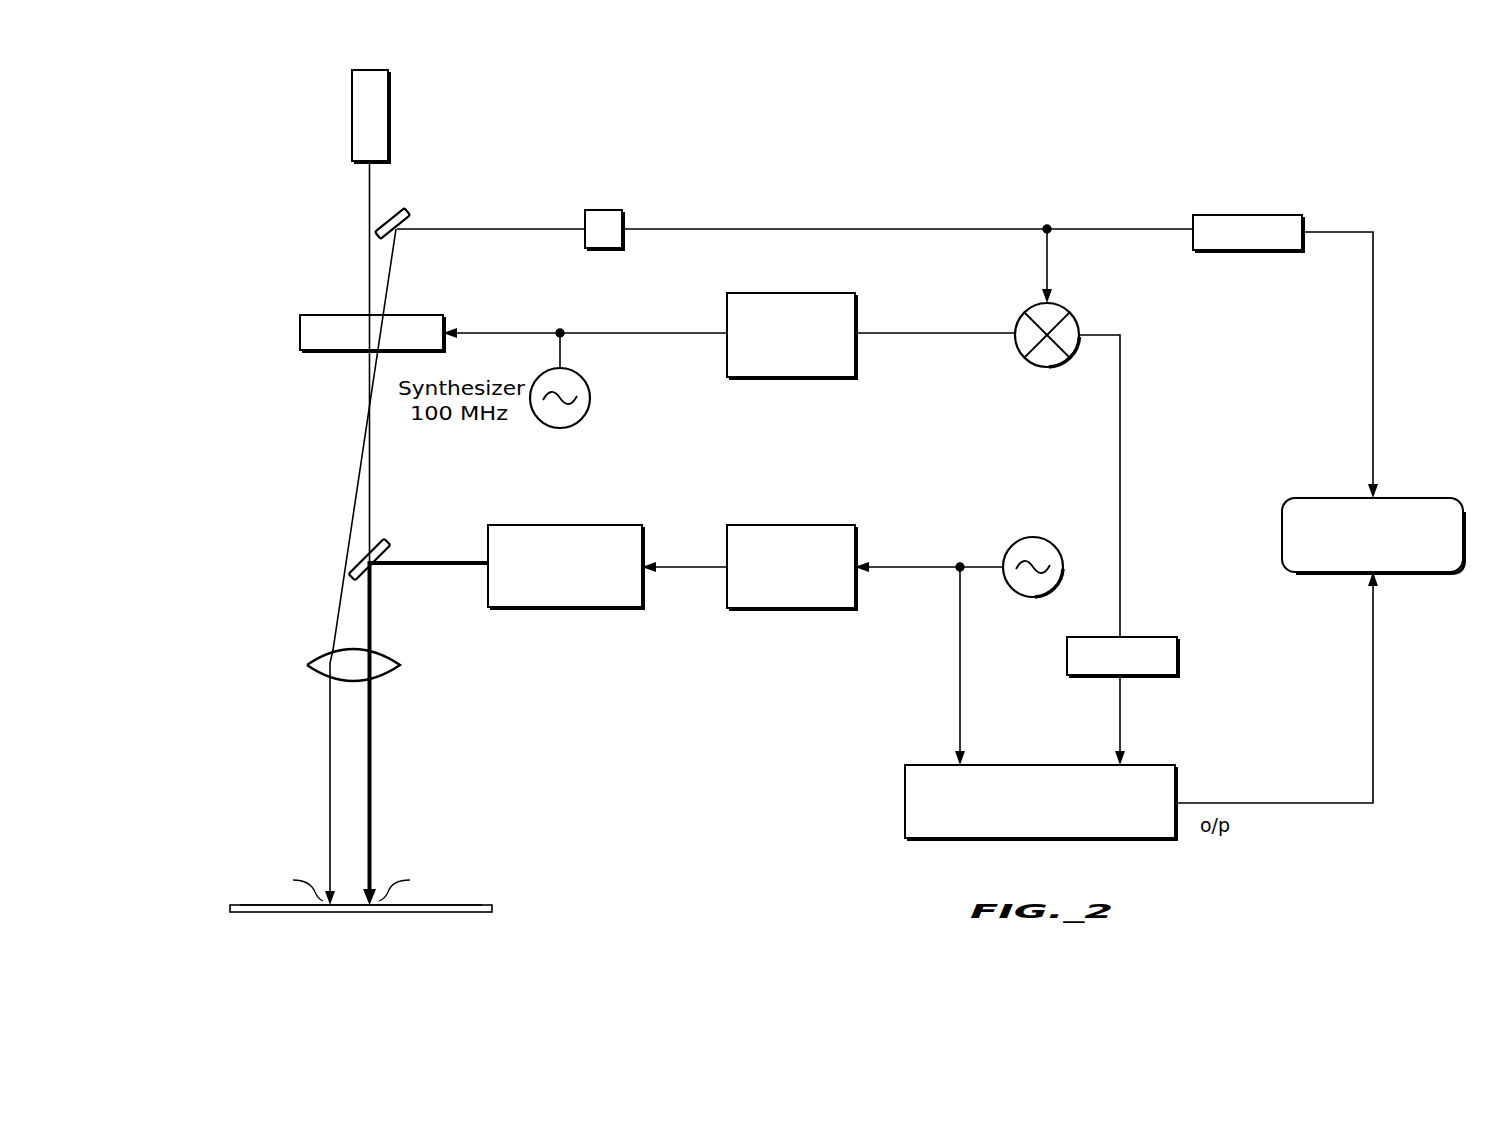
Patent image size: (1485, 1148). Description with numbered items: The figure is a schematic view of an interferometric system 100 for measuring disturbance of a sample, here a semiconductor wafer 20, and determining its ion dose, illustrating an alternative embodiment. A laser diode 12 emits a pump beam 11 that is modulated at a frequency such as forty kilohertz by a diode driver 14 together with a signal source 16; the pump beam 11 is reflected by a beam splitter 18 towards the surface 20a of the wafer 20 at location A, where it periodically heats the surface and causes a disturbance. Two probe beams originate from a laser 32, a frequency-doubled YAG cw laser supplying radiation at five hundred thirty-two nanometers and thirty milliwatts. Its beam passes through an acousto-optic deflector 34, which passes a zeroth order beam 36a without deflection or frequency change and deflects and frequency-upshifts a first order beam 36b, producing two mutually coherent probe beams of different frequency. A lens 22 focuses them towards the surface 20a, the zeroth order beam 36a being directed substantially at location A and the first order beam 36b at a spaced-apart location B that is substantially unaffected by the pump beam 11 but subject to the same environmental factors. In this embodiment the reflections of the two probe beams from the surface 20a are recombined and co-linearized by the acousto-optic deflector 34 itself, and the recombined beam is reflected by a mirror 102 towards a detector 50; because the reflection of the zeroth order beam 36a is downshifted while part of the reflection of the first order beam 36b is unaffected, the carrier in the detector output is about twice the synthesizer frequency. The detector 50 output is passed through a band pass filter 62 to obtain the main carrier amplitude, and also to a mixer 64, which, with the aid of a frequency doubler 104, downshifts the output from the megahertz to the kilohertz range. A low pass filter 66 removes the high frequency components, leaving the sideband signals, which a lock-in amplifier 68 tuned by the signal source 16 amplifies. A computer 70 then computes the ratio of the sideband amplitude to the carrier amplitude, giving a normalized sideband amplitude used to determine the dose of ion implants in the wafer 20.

The interferometric system 100 is at (258, 196).
The laser 32 is at (352, 115).
The mirror 102 is at (400, 212).
The detector 50 is at (624, 220).
The band pass filter 62 is at (1248, 215).
The acousto-optic deflector 34 is at (350, 315).
The frequency doubler 104 is at (797, 293).
The mixer 64 is at (1070, 318).
The zeroth order beam 36a is at (371, 474).
The first order beam 36b is at (347, 534).
The laser diode 12 is at (572, 525).
The diode driver 14 is at (797, 525).
The signal source 16 is at (1048, 591).
The beam splitter 18 is at (388, 544).
The pump beam 11 is at (397, 567).
The lens 22 is at (318, 656).
The semiconductor wafer 20 is at (252, 888).
The surface 20a is at (442, 905).
The low pass filter 66 is at (1160, 637).
The lock-in amplifier 68 is at (928, 765).
The computer 70 is at (1330, 498).